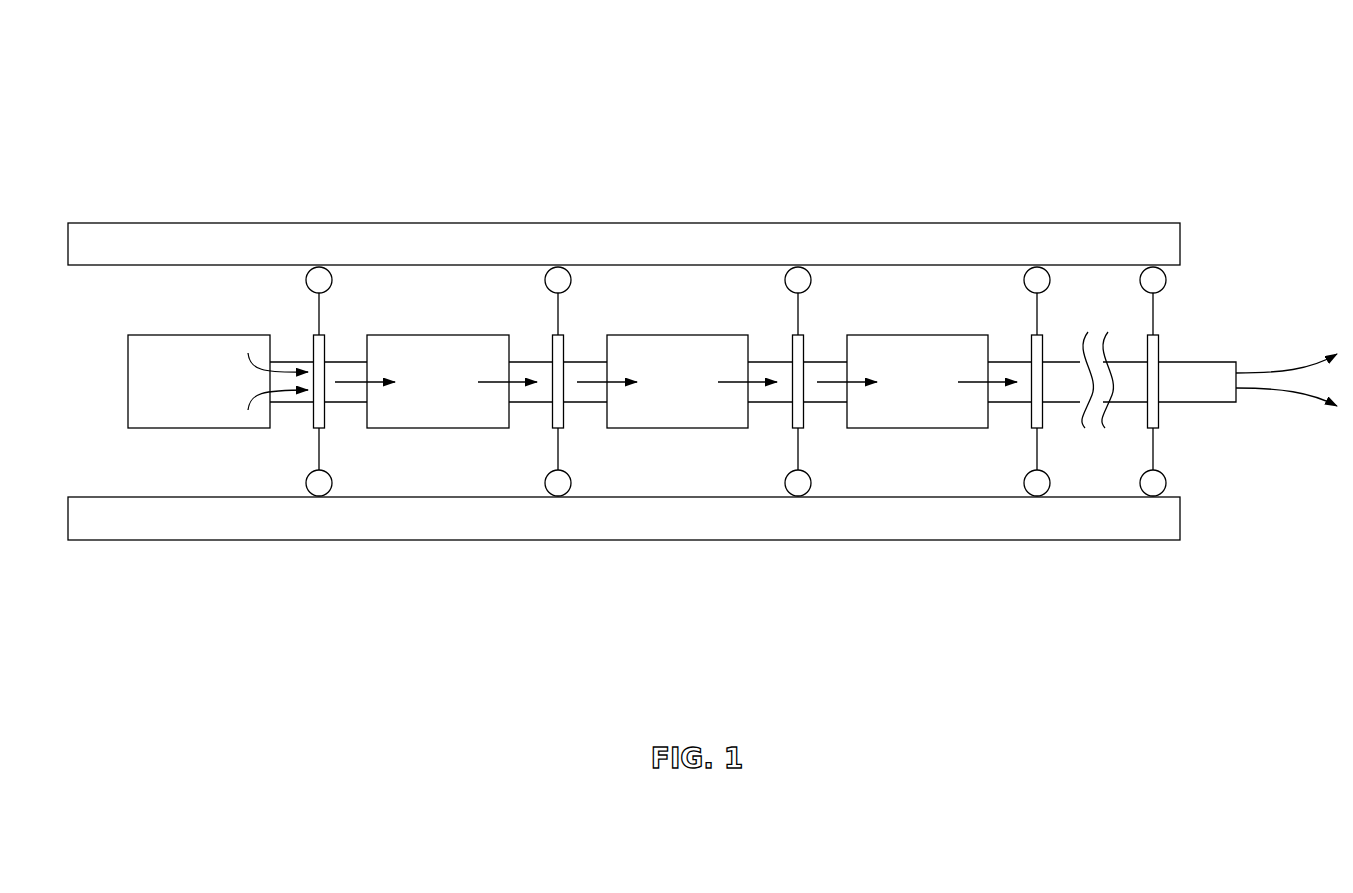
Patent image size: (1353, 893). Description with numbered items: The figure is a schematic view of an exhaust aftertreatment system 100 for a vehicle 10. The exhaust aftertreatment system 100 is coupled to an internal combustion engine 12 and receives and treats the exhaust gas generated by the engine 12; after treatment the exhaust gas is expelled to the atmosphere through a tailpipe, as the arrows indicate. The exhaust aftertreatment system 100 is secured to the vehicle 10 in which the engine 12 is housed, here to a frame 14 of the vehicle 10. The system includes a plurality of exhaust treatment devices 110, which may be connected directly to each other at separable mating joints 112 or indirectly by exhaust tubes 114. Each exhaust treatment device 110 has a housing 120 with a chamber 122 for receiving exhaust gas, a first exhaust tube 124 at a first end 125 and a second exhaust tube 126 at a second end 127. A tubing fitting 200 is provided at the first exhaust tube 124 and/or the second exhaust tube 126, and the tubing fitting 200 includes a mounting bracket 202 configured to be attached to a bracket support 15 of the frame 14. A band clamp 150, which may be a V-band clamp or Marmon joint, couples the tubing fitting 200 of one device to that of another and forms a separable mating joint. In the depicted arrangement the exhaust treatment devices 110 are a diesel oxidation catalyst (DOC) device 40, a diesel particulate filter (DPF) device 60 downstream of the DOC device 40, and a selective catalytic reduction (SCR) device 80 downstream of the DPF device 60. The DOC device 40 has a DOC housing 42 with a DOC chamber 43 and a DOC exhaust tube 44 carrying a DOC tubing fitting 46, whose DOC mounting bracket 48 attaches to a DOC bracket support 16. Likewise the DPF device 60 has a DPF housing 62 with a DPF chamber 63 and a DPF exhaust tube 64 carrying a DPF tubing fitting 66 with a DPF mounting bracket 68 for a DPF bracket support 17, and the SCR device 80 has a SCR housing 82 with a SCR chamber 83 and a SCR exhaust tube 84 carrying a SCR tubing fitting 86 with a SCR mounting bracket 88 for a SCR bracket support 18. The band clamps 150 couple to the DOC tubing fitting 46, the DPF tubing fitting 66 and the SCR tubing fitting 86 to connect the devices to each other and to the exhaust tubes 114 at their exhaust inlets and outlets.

The vehicle 10 is at (313, 93).
The internal combustion engine 12 is at (143, 382).
The frame 14 is at (140, 238).
The bracket support 15 is at (332, 280).
The DOC bracket support 16 is at (573, 412).
The DPF bracket support 17 is at (785, 486).
The SCR bracket support 18 is at (1024, 486).
The diesel oxidation catalyst (DOC) device 40 is at (423, 328).
The DOC housing 42 is at (402, 428).
The DOC chamber 43 is at (440, 405).
The DOC exhaust tube 44 is at (353, 402).
The DOC tubing fitting 46 is at (521, 398).
The DOC mounting bracket 48 is at (568, 345).
The diesel particulate filter (DPF) device 60 is at (663, 328).
The DPF housing 62 is at (643, 428).
The DPF chamber 63 is at (678, 405).
The DPF exhaust tube 64 is at (770, 402).
The DPF tubing fitting 66 is at (803, 347).
The DPF mounting bracket 68 is at (776, 369).
The selective catalytic reduction (SCR) device 80 is at (902, 327).
The SCR housing 82 is at (918, 407).
The SCR chamber 83 is at (883, 428).
The SCR exhaust tube 84 is at (1012, 402).
The SCR tubing fitting 86 is at (1042, 348).
The SCR mounting bracket 88 is at (1037, 377).
The exhaust aftertreatment system 100 is at (300, 462).
The exhaust treatment device 110 is at (302, 386).
The separable mating joint 112 is at (595, 362).
The exhaust tube 114 is at (597, 355).
The housing 120 is at (636, 333).
The chamber 122 is at (683, 367).
The first exhaust tube 124 is at (595, 402).
The first end 125 is at (547, 486).
The second exhaust tube 126 is at (770, 362).
The second end 127 is at (770, 462).
The band clamp 150 is at (1045, 393).
The tubing fitting 200 is at (1037, 450).
The mounting bracket 202 is at (1043, 303).